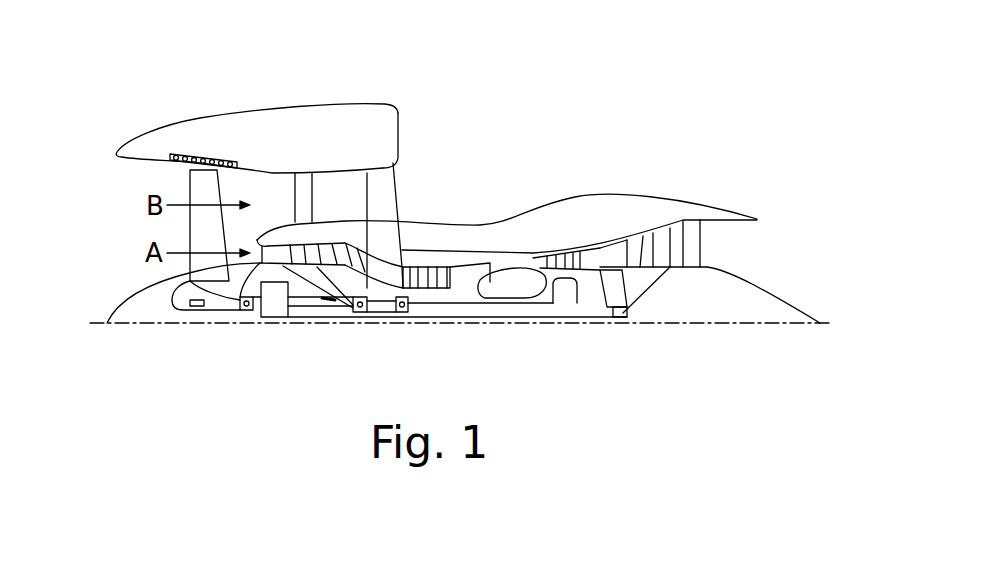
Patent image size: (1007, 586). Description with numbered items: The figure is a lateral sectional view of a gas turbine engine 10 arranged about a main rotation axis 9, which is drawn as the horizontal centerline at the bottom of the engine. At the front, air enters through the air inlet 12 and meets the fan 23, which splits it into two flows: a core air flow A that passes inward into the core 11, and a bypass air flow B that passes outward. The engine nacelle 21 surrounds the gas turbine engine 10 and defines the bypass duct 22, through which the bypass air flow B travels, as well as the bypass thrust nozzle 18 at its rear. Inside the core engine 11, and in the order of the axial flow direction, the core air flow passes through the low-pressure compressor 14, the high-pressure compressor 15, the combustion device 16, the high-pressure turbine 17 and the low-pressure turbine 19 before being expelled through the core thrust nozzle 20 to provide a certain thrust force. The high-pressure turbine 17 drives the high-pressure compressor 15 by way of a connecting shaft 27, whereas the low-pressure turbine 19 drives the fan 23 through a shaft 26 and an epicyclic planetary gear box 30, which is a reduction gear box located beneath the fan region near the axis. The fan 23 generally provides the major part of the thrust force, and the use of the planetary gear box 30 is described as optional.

The main rotation axis 9 is at (727, 327).
The gas turbine engine 10 is at (174, 122).
The core 11 is at (526, 247).
The air inlet 12 is at (129, 183).
The low-pressure compressor 14 is at (330, 248).
The high-pressure compressor 15 is at (453, 270).
The combustion device 16 is at (513, 275).
The high-pressure turbine 17 is at (567, 252).
The bypass thrust nozzle 18 is at (706, 119).
The low-pressure turbine 19 is at (680, 257).
The core thrust nozzle 20 is at (753, 254).
The engine nacelle 21 is at (388, 118).
The bypass duct 22 is at (600, 164).
The fan 23 is at (197, 238).
The shaft 26 is at (420, 316).
The connecting shaft 27 is at (477, 310).
The epicyclic planetary gear box 30 is at (273, 310).